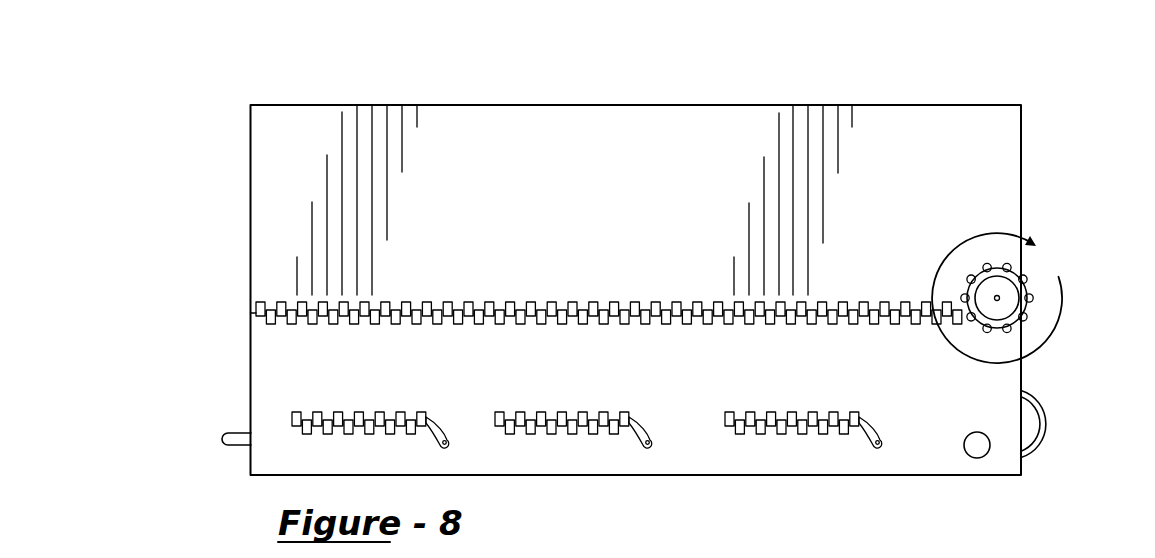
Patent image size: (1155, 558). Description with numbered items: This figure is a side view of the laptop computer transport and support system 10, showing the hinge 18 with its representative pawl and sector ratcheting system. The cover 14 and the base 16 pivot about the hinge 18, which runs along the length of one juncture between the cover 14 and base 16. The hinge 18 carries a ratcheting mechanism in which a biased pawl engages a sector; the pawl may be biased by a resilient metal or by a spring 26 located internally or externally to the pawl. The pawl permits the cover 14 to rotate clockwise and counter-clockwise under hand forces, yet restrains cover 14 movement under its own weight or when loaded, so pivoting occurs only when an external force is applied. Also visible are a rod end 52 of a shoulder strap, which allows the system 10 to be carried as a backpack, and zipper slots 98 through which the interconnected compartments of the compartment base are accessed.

The laptop computer transport and support system 10 is at (849, 101).
The cover 14 is at (252, 191).
The base 16 is at (250, 362).
The hinge 18 is at (1064, 153).
The spring 26 is at (975, 555).
The rod end 52 is at (227, 442).
The zipper slots 98 is at (372, 427).